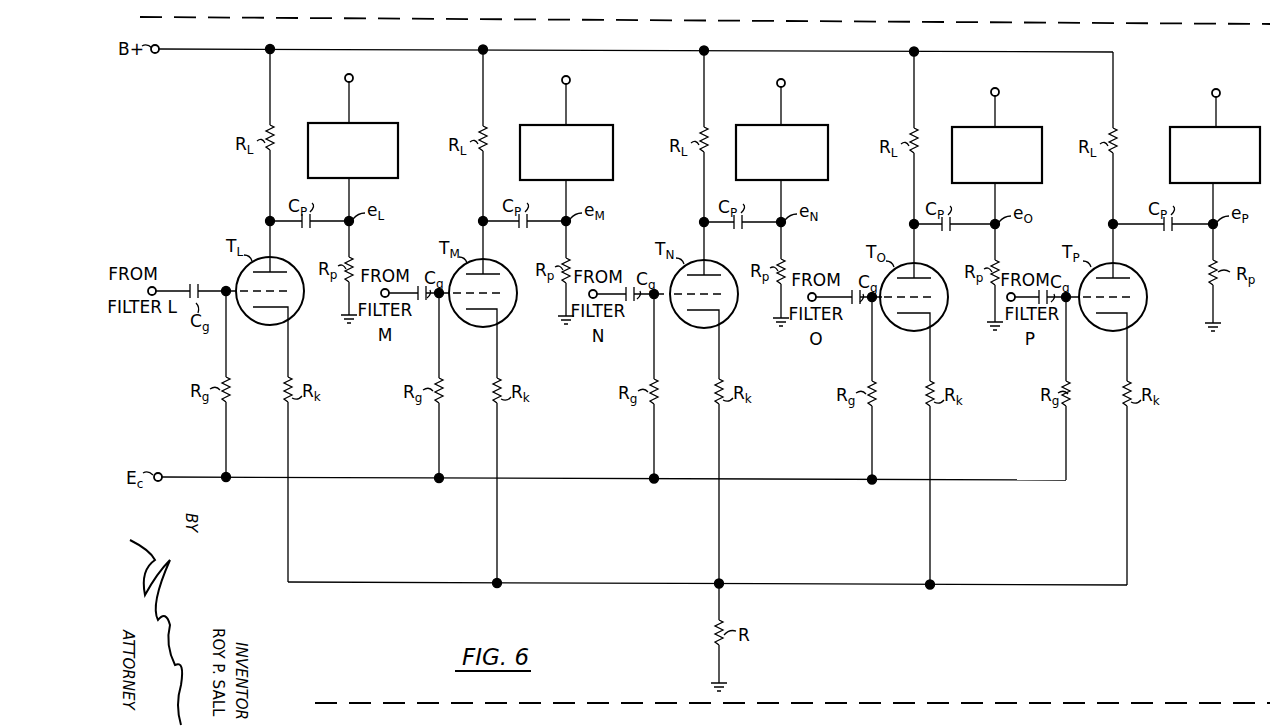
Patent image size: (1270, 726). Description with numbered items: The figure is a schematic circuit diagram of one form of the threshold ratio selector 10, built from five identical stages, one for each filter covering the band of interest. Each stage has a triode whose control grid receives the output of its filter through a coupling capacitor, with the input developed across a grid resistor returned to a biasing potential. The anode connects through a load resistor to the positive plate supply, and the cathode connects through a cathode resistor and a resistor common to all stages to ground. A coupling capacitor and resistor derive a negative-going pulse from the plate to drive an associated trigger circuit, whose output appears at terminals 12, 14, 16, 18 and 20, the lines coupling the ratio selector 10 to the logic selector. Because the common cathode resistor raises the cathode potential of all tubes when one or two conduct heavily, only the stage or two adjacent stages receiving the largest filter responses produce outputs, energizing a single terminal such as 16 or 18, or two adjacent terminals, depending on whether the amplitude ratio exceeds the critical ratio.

The threshold ratio selector 10 is at (757, 22).
The terminal 12 is at (353, 76).
The terminal 14 is at (570, 78).
The terminal 16 is at (785, 81).
The terminal 18 is at (999, 90).
The terminal 20 is at (1220, 91).